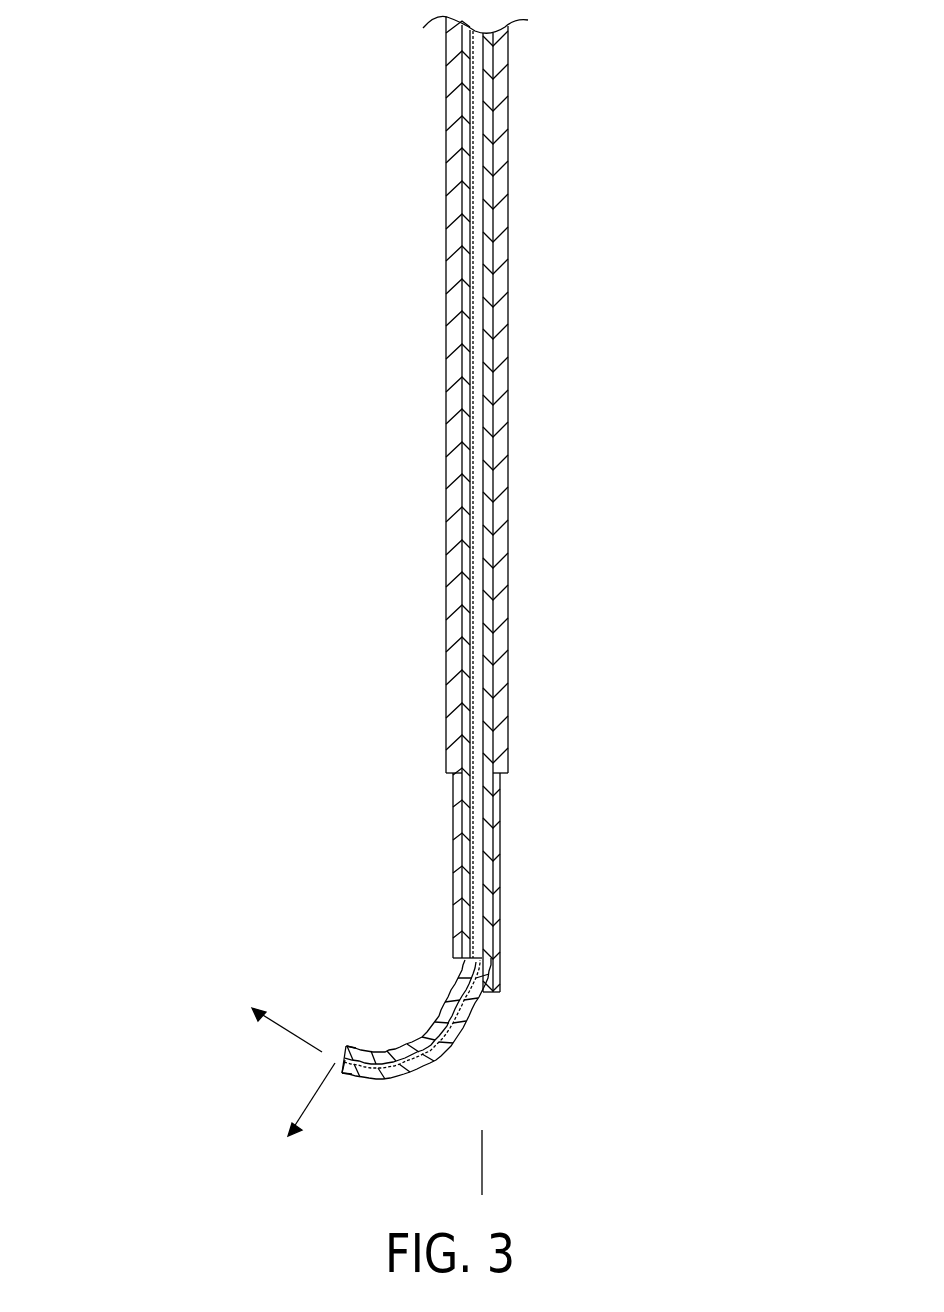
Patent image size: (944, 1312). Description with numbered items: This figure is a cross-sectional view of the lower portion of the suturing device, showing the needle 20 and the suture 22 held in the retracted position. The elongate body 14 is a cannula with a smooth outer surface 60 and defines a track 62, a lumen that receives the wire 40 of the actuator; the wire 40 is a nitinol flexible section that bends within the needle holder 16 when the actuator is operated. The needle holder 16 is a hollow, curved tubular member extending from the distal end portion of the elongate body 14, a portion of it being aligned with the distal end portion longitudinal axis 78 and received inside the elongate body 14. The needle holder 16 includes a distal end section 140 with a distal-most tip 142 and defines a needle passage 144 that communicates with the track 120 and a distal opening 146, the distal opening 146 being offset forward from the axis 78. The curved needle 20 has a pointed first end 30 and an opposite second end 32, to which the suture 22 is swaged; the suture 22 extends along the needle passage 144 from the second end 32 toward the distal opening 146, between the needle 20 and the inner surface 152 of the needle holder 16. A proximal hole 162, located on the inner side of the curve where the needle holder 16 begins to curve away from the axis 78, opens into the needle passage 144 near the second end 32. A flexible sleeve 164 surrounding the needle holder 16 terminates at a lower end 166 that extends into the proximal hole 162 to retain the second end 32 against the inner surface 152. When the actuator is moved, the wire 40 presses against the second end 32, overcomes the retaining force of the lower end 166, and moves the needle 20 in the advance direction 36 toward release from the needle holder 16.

The elongate body 14 is at (505, 233).
The needle holder 16 is at (480, 1008).
The needle 20 is at (417, 1048).
The suture 22 is at (296, 1134).
The first end 30 is at (350, 1044).
The second end 32 is at (495, 967).
The advance direction 36 is at (276, 1032).
The wire 40 is at (482, 735).
The outer surface 60 is at (508, 152).
The track 62 is at (487, 88).
The distal end portion longitudinal axis 78 is at (483, 1162).
The track 120 is at (488, 487).
The distal end section 140 is at (345, 1076).
The distal-most tip 142 is at (346, 1052).
The needle passage 144 is at (400, 1075).
The distal opening 146 is at (338, 1060).
The inner surface 152 is at (460, 1032).
The proximal hole 162 is at (448, 999).
The flexible sleeve 164 is at (500, 853).
The lower end 166 is at (458, 990).